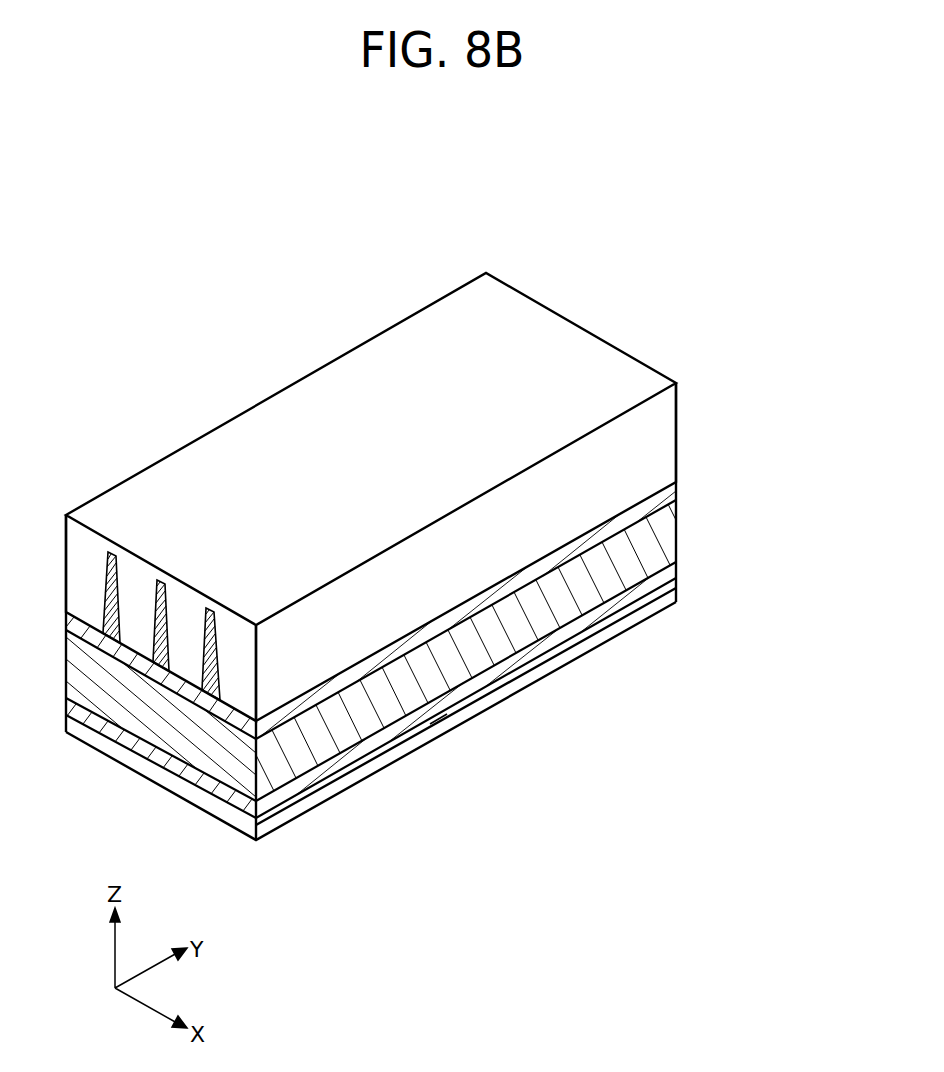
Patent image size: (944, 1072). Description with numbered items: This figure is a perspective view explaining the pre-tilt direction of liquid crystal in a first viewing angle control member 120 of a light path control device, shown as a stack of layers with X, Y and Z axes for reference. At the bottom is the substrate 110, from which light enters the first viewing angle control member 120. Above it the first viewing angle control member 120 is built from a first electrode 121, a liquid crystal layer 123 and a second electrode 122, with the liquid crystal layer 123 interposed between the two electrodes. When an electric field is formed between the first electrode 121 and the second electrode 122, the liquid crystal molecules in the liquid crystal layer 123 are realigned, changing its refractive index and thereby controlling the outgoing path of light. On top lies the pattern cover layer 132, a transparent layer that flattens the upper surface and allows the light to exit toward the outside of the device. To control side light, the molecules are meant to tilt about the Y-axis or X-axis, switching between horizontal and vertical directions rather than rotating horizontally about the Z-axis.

The pattern cover layer 132 is at (648, 434).
The first viewing angle control member 120 is at (450, 654).
The second electrode 122 is at (647, 498).
The liquid crystal layer 123 is at (650, 530).
The first electrode 121 is at (645, 582).
The substrate 110 is at (650, 605).